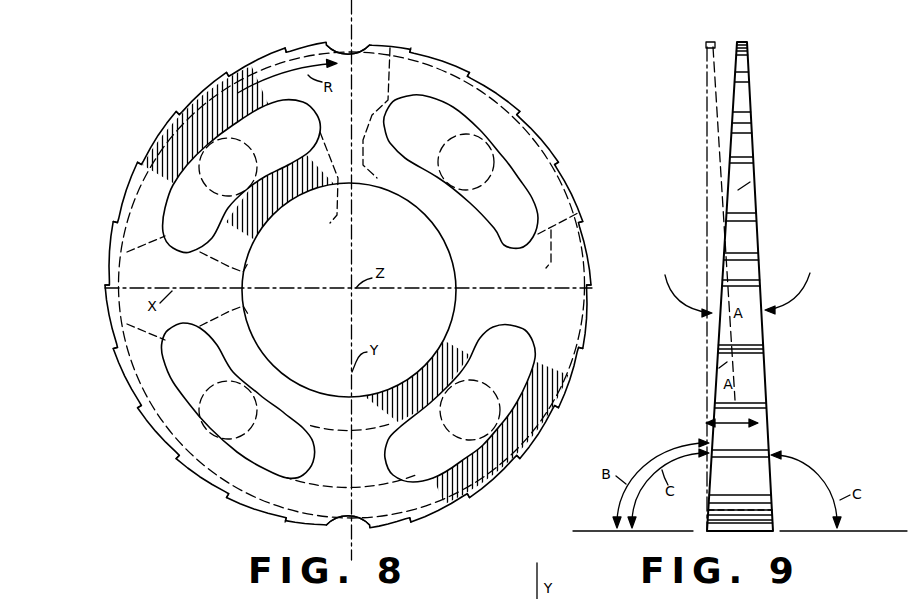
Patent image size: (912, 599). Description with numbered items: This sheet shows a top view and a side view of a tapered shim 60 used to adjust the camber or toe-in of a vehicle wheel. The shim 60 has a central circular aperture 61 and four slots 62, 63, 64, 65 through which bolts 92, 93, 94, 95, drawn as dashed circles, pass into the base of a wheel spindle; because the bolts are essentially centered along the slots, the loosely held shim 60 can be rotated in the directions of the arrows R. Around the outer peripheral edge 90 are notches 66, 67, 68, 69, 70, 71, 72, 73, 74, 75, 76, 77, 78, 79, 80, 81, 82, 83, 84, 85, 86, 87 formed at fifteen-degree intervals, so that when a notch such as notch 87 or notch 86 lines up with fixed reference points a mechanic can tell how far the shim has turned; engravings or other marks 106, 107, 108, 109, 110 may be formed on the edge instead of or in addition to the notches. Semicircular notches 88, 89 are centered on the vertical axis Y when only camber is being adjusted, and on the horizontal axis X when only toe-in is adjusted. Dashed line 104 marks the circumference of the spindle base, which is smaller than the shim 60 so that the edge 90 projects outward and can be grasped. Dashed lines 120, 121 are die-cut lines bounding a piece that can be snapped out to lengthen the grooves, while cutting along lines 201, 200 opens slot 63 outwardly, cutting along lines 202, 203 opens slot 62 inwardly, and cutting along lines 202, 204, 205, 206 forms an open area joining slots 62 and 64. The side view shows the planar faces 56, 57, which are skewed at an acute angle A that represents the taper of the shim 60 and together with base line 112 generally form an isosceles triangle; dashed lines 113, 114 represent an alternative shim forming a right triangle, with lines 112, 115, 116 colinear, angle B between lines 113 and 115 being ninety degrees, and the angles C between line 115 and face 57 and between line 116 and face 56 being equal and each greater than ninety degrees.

In FIG. 8, the planar face 56 is at (556, 312).
In FIG. 9, the planar face 56 is at (763, 360).
In FIG. 9, the planar face 57 is at (712, 334).
In FIG. 8, the shim 60 is at (192, 80).
In FIG. 8, the central circular aperture 61 is at (442, 238).
In FIG. 8, the slot 62 is at (203, 250).
In FIG. 8, the slot 63 is at (404, 98).
In FIG. 8, the slot 64 is at (312, 452).
In FIG. 8, the slot 65 is at (524, 334).
In FIG. 8, the notch 66 is at (411, 50).
In FIG. 9, the notch 66 is at (750, 58).
In FIG. 8, the notch 67 is at (469, 75).
In FIG. 9, the notch 67 is at (750, 80).
In FIG. 8, the notch 68 is at (519, 113).
In FIG. 9, the notch 68 is at (752, 113).
In FIG. 8, the notch 69 is at (556, 163).
In FIG. 9, the notch 69 is at (754, 165).
In FIG. 8, the notch 70 is at (580, 222).
In FIG. 9, the notch 70 is at (756, 214).
In FIG. 8, the notch 71 is at (590, 286).
In FIG. 9, the notch 71 is at (758, 281).
In FIG. 8, the notch 72 is at (581, 348).
In FIG. 9, the notch 72 is at (761, 346).
In FIG. 8, the notch 73 is at (557, 407).
In FIG. 9, the notch 73 is at (764, 406).
In FIG. 8, the notch 74 is at (518, 458).
In FIG. 9, the notch 74 is at (767, 452).
In FIG. 8, the notch 75 is at (469, 497).
In FIG. 9, the notch 75 is at (769, 497).
In FIG. 8, the notch 76 is at (411, 522).
In FIG. 9, the notch 76 is at (771, 517).
In FIG. 8, the notch 77 is at (287, 521).
In FIG. 8, the notch 78 is at (229, 497).
In FIG. 8, the notch 79 is at (179, 458).
In FIG. 8, the notch 80 is at (141, 408).
In FIG. 8, the notch 81 is at (117, 349).
In FIG. 8, the notch 82 is at (108, 287).
In FIG. 8, the notch 83 is at (116, 223).
In FIG. 8, the notch 84 is at (140, 164).
In FIG. 8, the notch 85 is at (178, 114).
In FIG. 8, the notch 86 is at (229, 75).
In FIG. 8, the notch 87 is at (286, 51).
In FIG. 8, the semicircular notch 88 is at (366, 44).
In FIG. 8, the semicircular notch 89 is at (369, 518).
In FIG. 8, the outer peripheral edge 90 is at (108, 253).
In FIG. 9, the outer peripheral edge 90 is at (750, 183).
In FIG. 8, the bolt 92 is at (254, 152).
In FIG. 8, the bolt 93 is at (489, 188).
In FIG. 8, the bolt 94 is at (214, 381).
In FIG. 8, the bolt 95 is at (445, 422).
In FIG. 8, the dashed line 104 is at (580, 200).
In FIG. 8, the mark 106 is at (126, 191).
In FIG. 8, the mark 107 is at (150, 141).
In FIG. 8, the mark 108 is at (228, 103).
In FIG. 9, the mark 109 is at (753, 133).
In FIG. 9, the mark 110 is at (756, 250).
In FIG. 9, the base line 112 is at (708, 520).
In FIG. 9, the dashed line 113 is at (706, 72).
In FIG. 9, the dashed line 114 is at (716, 46).
In FIG. 9, the line 115 is at (598, 530).
In FIG. 9, the line 116 is at (868, 530).
In FIG. 8, the dashed line 120 is at (341, 431).
In FIG. 8, the dashed line 121 is at (388, 485).
In FIG. 8, the line 200 is at (540, 244).
In FIG. 8, the line 201 is at (387, 114).
In FIG. 8, the line 202 is at (256, 262).
In FIG. 8, the line 203 is at (330, 214).
In FIG. 8, the line 204 is at (256, 313).
In FIG. 8, the line 205 is at (135, 262).
In FIG. 8, the line 206 is at (120, 330).